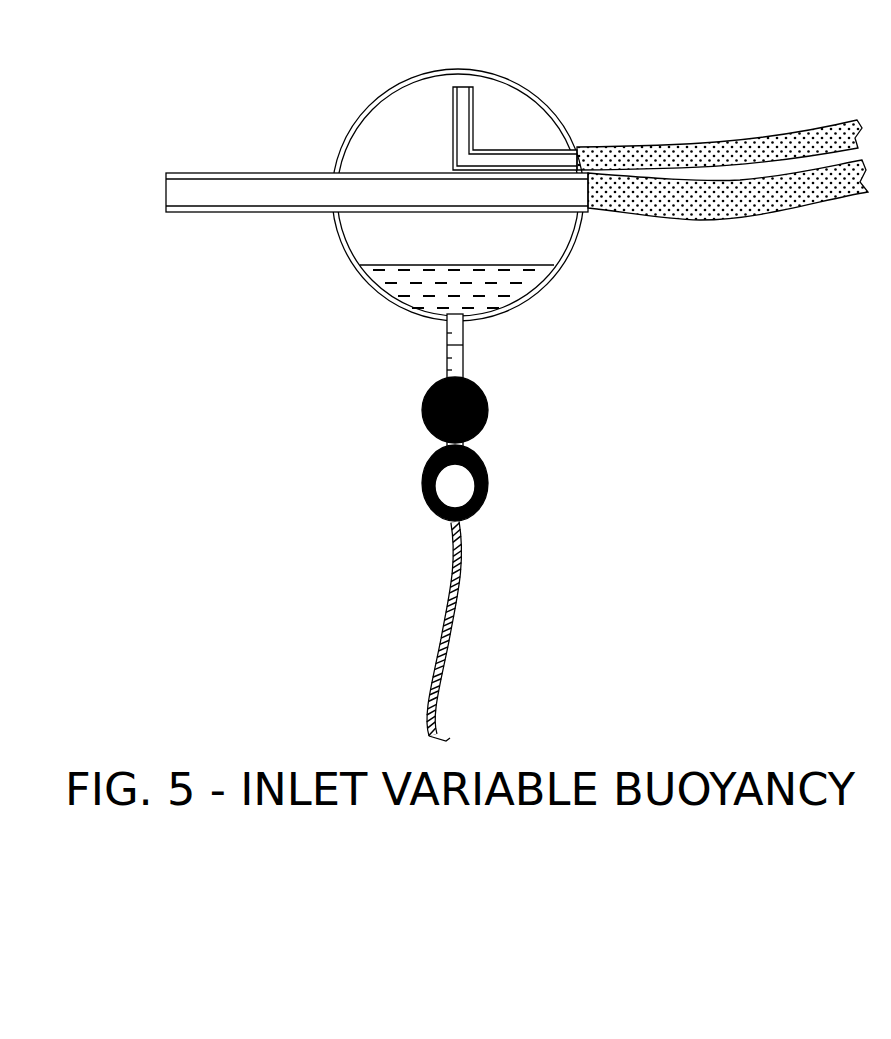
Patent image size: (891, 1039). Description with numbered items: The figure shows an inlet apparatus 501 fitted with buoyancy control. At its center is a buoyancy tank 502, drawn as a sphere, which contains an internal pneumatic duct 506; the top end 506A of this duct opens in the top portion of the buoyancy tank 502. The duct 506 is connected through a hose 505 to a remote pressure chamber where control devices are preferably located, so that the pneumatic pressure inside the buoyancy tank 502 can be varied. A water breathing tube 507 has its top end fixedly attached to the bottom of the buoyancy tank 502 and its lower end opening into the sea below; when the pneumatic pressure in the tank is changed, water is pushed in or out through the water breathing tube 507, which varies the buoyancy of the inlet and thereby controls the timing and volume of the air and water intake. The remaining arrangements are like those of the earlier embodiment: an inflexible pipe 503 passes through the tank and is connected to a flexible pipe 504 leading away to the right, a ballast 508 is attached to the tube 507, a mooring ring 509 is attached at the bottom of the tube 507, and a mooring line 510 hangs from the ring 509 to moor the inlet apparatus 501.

The inlet apparatus 501 is at (484, 48).
The buoyancy tank 502 is at (362, 96).
The inflexible pipe 503 is at (254, 160).
The flexible pipe 504 is at (705, 240).
The hose 505 is at (702, 102).
The pneumatic duct 506 is at (536, 109).
The top end of pneumatic duct 506A is at (474, 108).
The water breathing tube 507 is at (447, 355).
The ballast 508 is at (422, 411).
The mooring ring 509 is at (490, 488).
The mooring line 510 is at (443, 612).